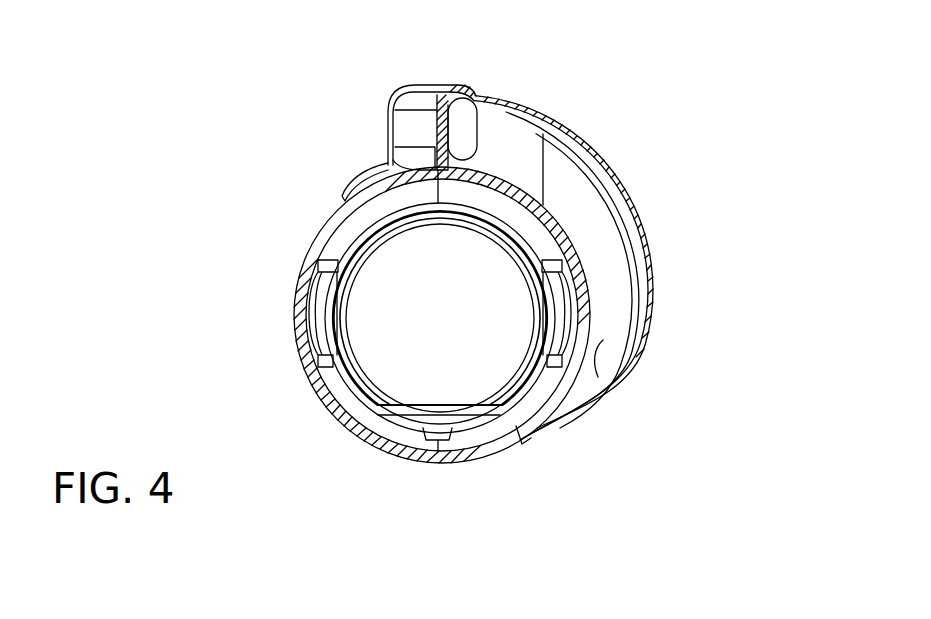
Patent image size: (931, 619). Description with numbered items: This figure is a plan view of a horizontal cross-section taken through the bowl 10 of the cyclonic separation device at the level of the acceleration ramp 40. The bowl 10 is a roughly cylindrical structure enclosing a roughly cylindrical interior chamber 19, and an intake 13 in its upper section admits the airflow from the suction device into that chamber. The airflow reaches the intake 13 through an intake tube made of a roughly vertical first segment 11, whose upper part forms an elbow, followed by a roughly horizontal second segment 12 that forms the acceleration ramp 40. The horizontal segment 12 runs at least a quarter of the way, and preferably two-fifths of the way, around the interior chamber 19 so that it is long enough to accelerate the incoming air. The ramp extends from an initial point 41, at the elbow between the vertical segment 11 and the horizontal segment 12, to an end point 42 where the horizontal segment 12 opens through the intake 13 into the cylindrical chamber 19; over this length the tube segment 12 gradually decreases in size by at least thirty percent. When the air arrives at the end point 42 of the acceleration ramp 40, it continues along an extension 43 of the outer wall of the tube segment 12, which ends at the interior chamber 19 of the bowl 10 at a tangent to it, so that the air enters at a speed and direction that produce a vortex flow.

The bowl 10 is at (248, 299).
The vertical first segment 11 is at (430, 85).
The horizontal second segment 12 is at (653, 277).
The intake 13 is at (552, 383).
The interior chamber 19 is at (395, 357).
The acceleration ramp 40 is at (590, 213).
The initial point 41 is at (473, 137).
The end point 42 is at (598, 377).
The extension 43 is at (513, 440).